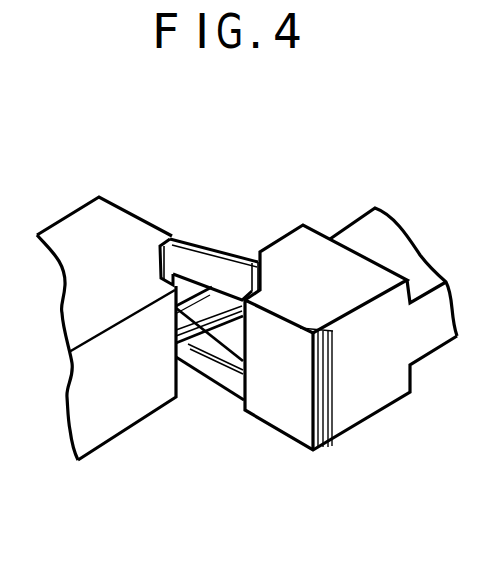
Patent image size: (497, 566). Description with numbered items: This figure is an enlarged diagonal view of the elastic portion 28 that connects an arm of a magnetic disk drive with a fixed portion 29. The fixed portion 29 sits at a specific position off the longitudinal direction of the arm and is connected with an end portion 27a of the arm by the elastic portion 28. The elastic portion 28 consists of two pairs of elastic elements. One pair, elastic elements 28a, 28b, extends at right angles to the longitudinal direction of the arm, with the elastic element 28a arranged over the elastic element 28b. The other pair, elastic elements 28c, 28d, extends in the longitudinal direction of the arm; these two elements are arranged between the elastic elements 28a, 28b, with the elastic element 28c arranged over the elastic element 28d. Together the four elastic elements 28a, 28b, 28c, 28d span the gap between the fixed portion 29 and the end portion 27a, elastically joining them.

The end portion 27a is at (355, 420).
The elastic portion 28 is at (240, 199).
The elastic element 28a is at (236, 235).
The elastic element 28b is at (222, 378).
The elastic element 28c is at (236, 262).
The elastic element 28d is at (188, 348).
The fixed portion 29 is at (78, 217).